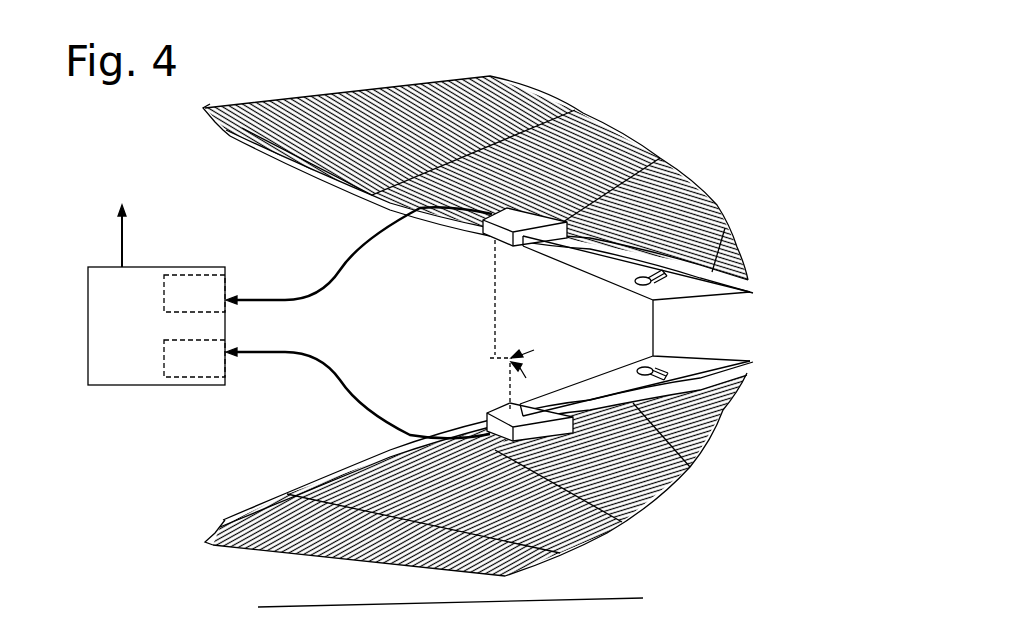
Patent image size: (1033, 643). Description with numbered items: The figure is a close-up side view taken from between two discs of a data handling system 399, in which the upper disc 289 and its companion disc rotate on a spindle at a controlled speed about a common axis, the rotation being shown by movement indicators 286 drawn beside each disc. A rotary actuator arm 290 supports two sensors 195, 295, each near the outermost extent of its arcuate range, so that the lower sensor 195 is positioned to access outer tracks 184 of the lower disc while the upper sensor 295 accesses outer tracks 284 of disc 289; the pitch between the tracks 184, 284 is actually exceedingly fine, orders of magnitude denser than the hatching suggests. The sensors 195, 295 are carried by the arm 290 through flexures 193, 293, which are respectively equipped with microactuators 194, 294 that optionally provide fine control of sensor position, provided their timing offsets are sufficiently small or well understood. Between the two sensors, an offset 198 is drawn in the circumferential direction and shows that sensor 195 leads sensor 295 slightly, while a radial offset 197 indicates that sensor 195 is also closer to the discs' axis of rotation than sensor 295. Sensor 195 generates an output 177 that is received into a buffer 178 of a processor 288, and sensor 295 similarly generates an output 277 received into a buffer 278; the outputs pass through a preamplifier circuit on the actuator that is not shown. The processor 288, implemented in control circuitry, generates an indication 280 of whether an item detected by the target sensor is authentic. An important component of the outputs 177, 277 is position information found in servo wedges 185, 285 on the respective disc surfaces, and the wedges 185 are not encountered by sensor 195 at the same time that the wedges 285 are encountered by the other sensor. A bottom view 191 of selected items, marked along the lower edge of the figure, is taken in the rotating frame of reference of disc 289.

The data handling system 399 is at (758, 81).
The servo wedges 285 is at (483, 74).
The outer tracks 284 is at (745, 244).
The rotary actuator arm 290 is at (722, 341).
The outer tracks 184 is at (748, 368).
The servo wedges 185 is at (542, 564).
The bottom view 191 is at (643, 598).
The movement indicator 286 is at (257, 168).
The disc 289 is at (306, 176).
The sensor 295 is at (480, 230).
The sensor 195 is at (490, 424).
The flexure 293 is at (567, 255).
The flexure 193 is at (579, 400).
The microactuator 294 is at (622, 274).
The microactuator 194 is at (622, 377).
The radial offset 197 is at (488, 348).
The offset 198 is at (486, 365).
The processor 288 is at (136, 339).
The buffer 278 is at (214, 306).
The buffer 178 is at (214, 370).
The indication 280 is at (103, 236).
The output 277 is at (359, 255).
The output 177 is at (358, 393).